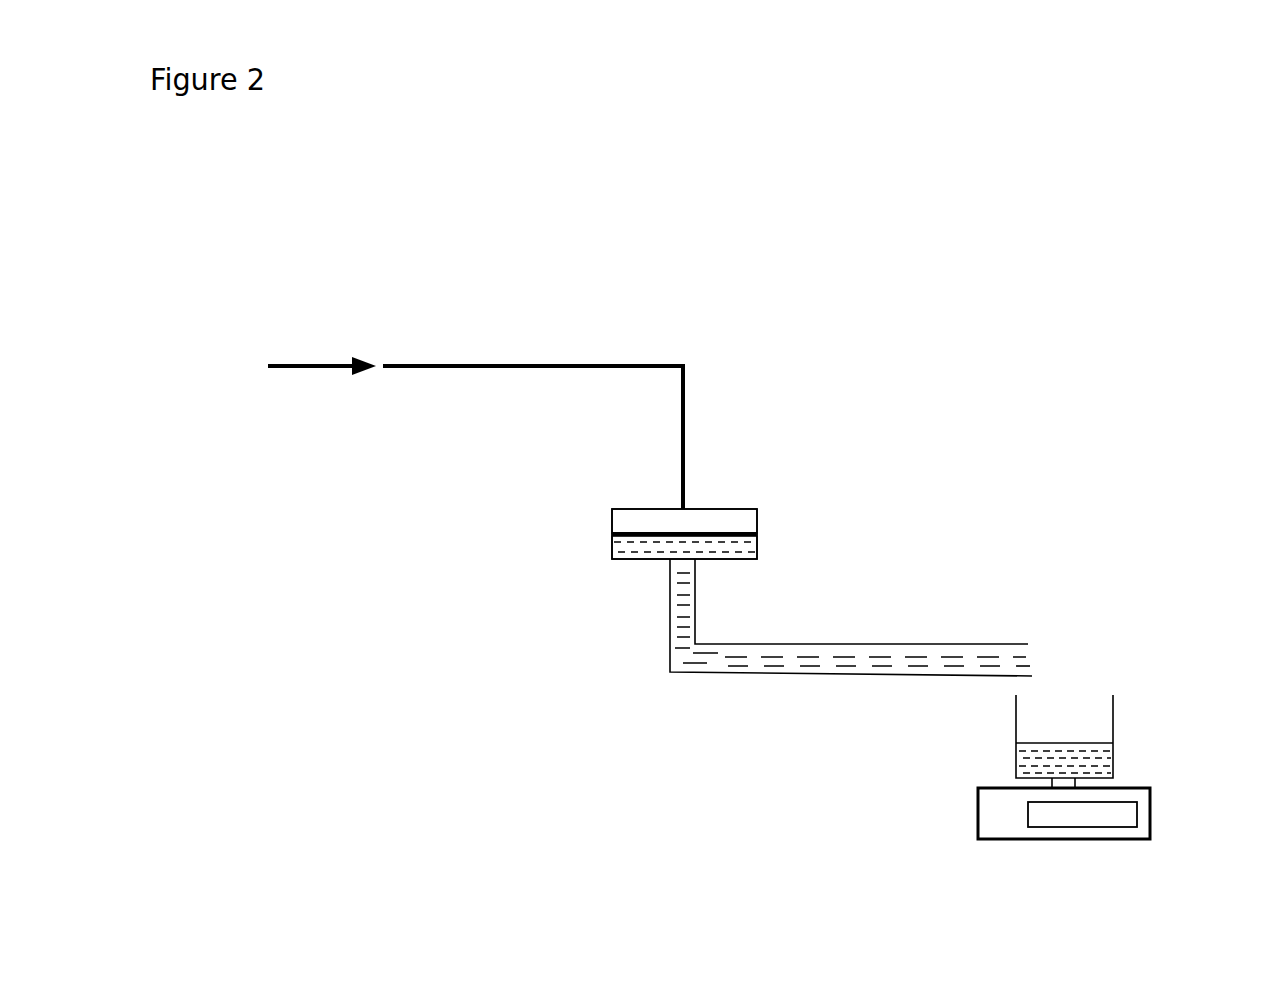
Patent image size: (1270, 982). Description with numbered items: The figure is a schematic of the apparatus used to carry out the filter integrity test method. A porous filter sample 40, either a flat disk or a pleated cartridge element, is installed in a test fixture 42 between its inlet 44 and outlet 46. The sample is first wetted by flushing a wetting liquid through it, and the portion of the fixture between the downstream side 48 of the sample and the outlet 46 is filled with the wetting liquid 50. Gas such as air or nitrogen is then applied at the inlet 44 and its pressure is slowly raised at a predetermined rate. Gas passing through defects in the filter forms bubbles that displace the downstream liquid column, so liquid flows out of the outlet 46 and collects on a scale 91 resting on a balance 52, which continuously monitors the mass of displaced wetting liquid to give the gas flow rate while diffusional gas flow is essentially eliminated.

The inlet 44 is at (384, 344).
The test fixture 42 is at (650, 503).
The porous filter sample 40 is at (748, 535).
The downstream side 48 is at (624, 548).
The wetting liquid 50 is at (656, 554).
The outlet 46 is at (1018, 636).
The scale 91 is at (1132, 752).
The balance 52 is at (1168, 814).